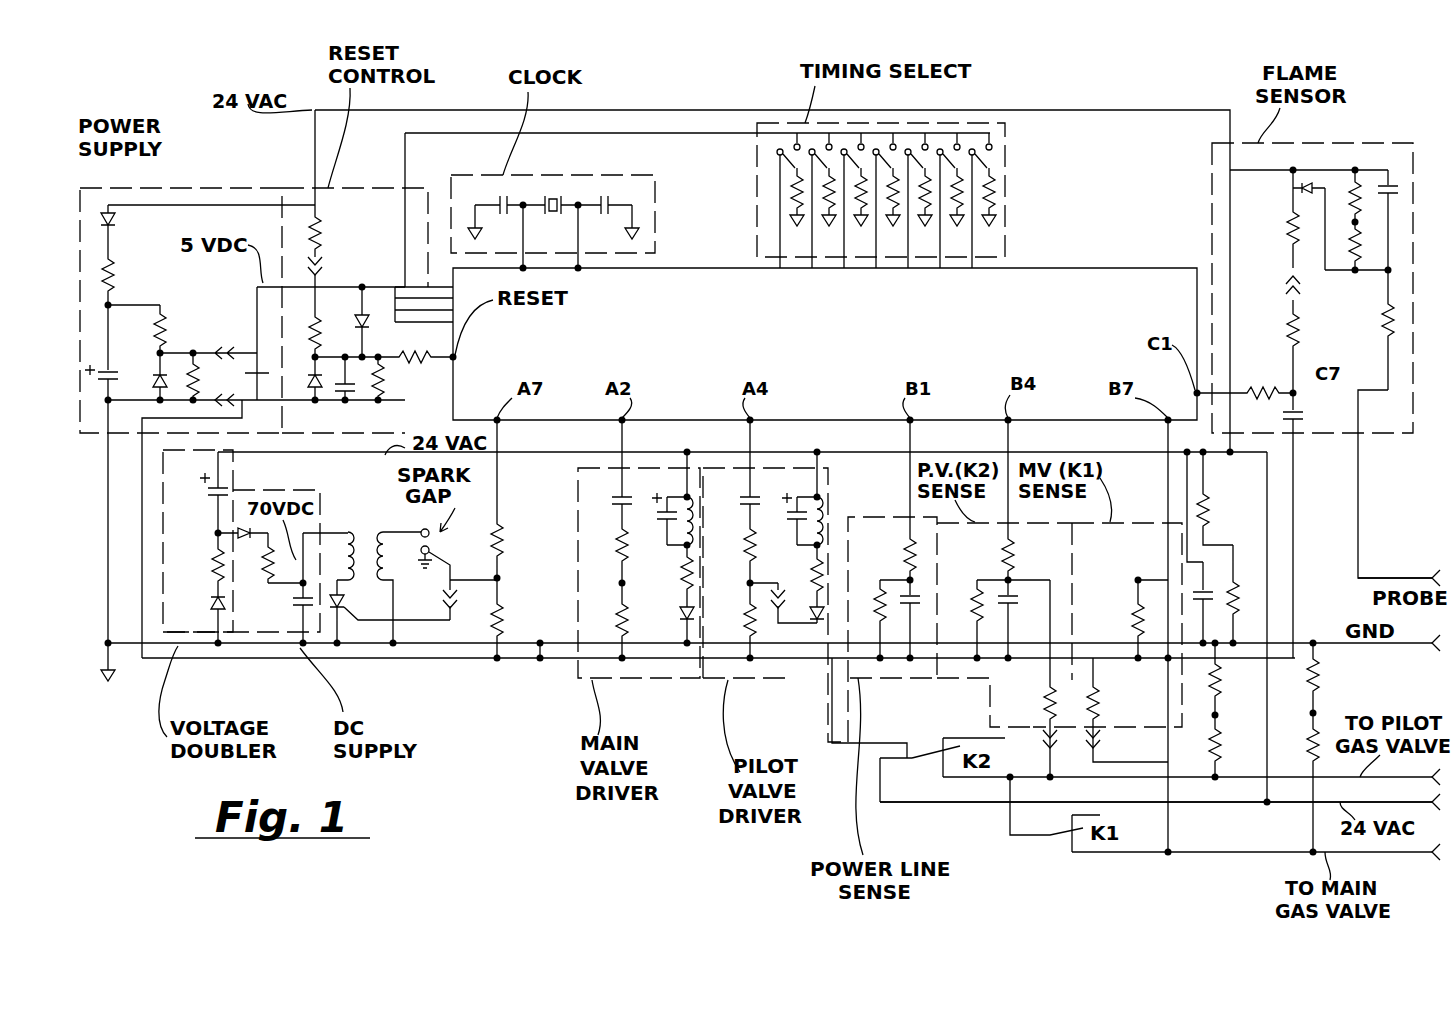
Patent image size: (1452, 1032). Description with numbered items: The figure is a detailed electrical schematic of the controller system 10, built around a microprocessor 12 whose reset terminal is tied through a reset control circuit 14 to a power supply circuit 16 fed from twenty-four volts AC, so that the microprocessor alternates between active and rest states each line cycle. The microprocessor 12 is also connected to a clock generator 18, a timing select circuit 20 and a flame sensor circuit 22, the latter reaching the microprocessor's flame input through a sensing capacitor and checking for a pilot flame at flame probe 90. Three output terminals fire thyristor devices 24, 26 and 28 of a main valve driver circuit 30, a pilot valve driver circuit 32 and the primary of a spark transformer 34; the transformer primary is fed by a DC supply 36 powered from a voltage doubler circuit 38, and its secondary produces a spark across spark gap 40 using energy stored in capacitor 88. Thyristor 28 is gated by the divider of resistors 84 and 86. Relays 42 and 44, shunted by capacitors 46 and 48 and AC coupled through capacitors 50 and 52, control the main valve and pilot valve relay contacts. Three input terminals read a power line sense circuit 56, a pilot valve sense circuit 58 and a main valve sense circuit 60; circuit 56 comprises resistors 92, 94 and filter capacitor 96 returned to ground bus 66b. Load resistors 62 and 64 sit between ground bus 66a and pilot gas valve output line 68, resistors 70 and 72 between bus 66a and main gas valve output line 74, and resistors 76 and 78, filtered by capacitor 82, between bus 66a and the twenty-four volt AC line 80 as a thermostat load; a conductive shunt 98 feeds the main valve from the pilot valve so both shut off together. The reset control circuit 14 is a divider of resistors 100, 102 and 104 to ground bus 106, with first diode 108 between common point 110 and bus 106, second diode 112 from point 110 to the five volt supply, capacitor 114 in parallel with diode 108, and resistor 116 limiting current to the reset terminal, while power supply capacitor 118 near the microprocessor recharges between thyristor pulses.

The controller system 10 is at (667, 70).
The microprocessor 12 is at (1005, 328).
The reset control circuit 14 is at (330, 190).
The power supply circuit 16 is at (210, 188).
The clock generator 18 is at (565, 175).
The timing select circuit 20 is at (1005, 152).
The flame sensor circuit 22 is at (1367, 143).
The thyristor device 24 is at (683, 625).
The thyristor device 26 is at (826, 618).
The thyristor device 28 is at (342, 615).
The main valve driver circuit 30 is at (630, 680).
The pilot valve driver circuit 32 is at (770, 680).
The spark transformer 34 is at (357, 530).
The DC supply 36 is at (262, 655).
The voltage doubler circuit 38 is at (218, 659).
The spark gap 40 is at (495, 538).
The electromagnetic relay 42 is at (690, 475).
The electromagnetic relay 44 is at (762, 505).
The capacitor 46 is at (672, 532).
The capacitor 48 is at (790, 520).
The capacitor 50 is at (622, 505).
The capacitor 52 is at (749, 515).
The power line sense circuit 56 is at (872, 680).
The pilot valve sense circuit 58 is at (950, 678).
The main valve sense circuit 60 is at (1122, 722).
The resistor 62 is at (1215, 688).
The resistor 64 is at (1250, 742).
The ground bus 66a is at (437, 660).
The ground bus 66b is at (522, 663).
The pilot gas valve output line 68 is at (1015, 775).
The resistor 70 is at (1329, 679).
The resistor 72 is at (1320, 722).
The main gas valve relay output line 74 is at (1197, 855).
The resistor 76 is at (1207, 505).
The resistor 78 is at (1240, 585).
The 24 volt AC line 80 is at (1238, 805).
The capacitor 82 is at (1237, 622).
The resistor 84 is at (499, 527).
The resistor 86 is at (499, 622).
The capacitor 88 is at (298, 597).
The flame probe 90 is at (1390, 578).
The resistor 92 is at (908, 540).
The resistor 94 is at (877, 600).
The filter capacitor 96 is at (915, 598).
The conductive shunt 98 is at (1003, 815).
The resistor 100 is at (318, 213).
The resistor 102 is at (310, 322).
The resistor 104 is at (392, 401).
The ground bus 106 is at (273, 402).
The first diode 108 is at (313, 400).
The common point 110 is at (323, 353).
The second diode 112 is at (363, 312).
The capacitor 114 is at (345, 402).
The resistor 116 is at (440, 372).
The power supply capacitor 118 is at (252, 368).